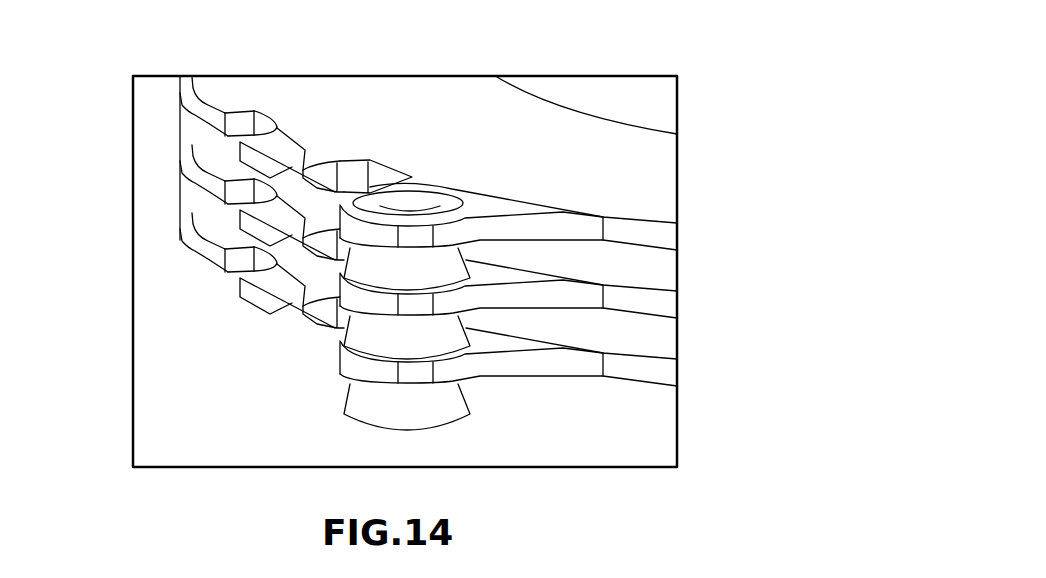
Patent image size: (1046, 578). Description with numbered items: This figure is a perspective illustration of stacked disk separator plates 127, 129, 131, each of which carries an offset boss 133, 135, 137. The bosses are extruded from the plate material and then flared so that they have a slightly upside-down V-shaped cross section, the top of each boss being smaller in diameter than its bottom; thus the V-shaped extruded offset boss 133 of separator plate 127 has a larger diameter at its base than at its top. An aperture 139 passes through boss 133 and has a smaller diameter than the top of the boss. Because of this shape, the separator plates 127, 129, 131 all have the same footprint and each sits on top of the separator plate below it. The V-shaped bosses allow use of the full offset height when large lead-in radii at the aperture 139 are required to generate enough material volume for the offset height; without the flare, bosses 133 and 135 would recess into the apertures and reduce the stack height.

The separator plate 127 is at (633, 161).
The separator plate 129 is at (648, 279).
The separator plate 131 is at (648, 347).
The offset boss 133 is at (363, 258).
The offset boss 135 is at (347, 338).
The offset boss 137 is at (370, 417).
The aperture 139 is at (422, 197).